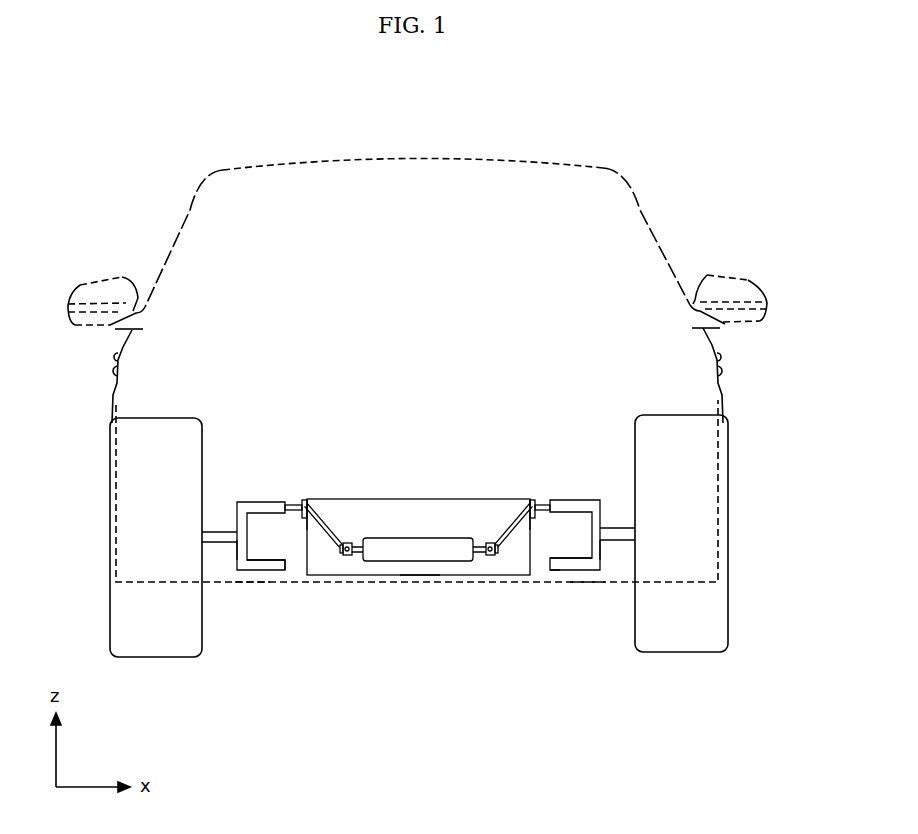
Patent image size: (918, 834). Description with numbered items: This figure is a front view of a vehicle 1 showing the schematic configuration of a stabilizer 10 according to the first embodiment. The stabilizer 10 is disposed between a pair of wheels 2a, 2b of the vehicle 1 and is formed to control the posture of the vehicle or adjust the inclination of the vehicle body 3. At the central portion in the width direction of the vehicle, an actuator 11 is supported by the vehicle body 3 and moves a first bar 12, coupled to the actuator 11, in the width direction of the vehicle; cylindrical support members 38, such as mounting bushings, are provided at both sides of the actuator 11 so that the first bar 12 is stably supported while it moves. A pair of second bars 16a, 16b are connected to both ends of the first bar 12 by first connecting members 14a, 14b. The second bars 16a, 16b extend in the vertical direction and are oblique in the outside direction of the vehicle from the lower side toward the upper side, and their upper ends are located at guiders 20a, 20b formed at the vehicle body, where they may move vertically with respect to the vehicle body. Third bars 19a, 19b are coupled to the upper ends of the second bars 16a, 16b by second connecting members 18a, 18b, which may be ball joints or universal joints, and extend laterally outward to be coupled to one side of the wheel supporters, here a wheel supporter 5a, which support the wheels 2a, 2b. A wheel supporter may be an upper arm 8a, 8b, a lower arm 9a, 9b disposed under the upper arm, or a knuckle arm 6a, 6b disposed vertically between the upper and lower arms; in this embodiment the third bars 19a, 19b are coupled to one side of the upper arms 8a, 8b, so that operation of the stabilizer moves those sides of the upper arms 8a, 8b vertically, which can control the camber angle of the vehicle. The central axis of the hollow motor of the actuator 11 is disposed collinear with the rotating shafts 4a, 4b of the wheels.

The vehicle 1 is at (508, 144).
The wheel 2a is at (110, 555).
The wheel 2b is at (728, 553).
The vehicle body 3 is at (421, 575).
The rotating shaft 4a is at (218, 532).
The rotating shaft 4b is at (620, 528).
The wheel supporter 5a is at (252, 582).
The knuckle arm 6a is at (235, 552).
The knuckle arm 6b is at (603, 552).
The upper arm 8a is at (253, 502).
The upper arm 8b is at (582, 500).
The lower arm 9a is at (270, 572).
The lower arm 9b is at (567, 570).
The stabilizer 10 is at (393, 574).
The actuator 11 is at (418, 538).
The first bar 12 is at (482, 558).
The first connecting member 14a is at (345, 556).
The first connecting member 14b is at (494, 556).
The second bar 16a is at (326, 546).
The second bar 16b is at (511, 540).
The second connecting member 18a is at (316, 499).
The second connecting member 18b is at (518, 499).
The third bar 19a is at (293, 505).
The third bar 19b is at (542, 505).
The guider 20a is at (305, 500).
The guider 20b is at (531, 500).
The cylindrical support member 38 is at (348, 543).